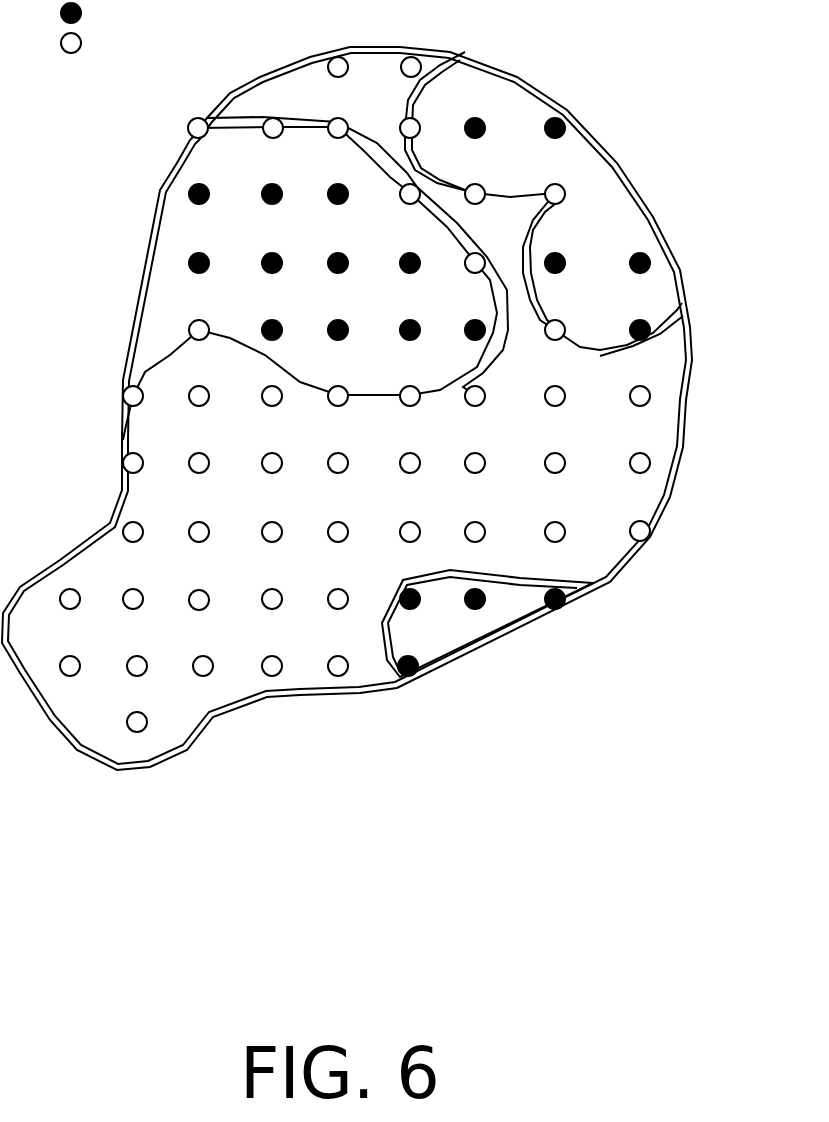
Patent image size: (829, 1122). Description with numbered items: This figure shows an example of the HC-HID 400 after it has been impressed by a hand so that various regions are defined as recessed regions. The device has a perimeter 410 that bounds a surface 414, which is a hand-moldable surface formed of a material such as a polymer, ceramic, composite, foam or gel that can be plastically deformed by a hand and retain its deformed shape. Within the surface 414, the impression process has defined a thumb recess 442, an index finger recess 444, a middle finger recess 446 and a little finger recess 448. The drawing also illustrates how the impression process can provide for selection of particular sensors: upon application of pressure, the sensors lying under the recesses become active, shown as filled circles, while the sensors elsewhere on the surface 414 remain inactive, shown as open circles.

The HC-HID 400 is at (610, 33).
The perimeter 410 is at (618, 161).
The surface 414 is at (329, 434).
The thumb recess 442 is at (392, 304).
The index finger recess 444 is at (490, 107).
The middle finger recess 446 is at (619, 296).
The little finger recess 448 is at (526, 621).